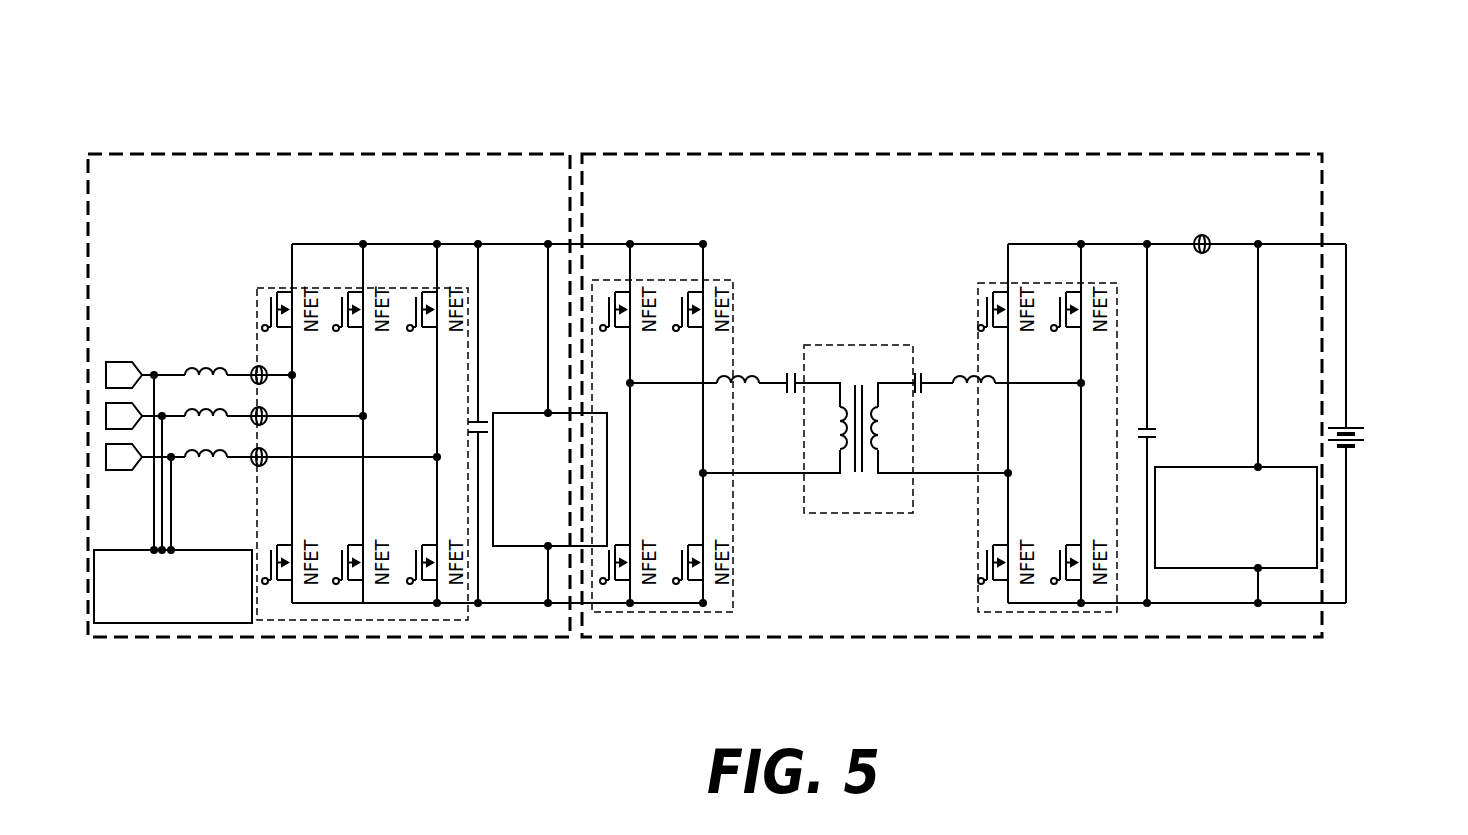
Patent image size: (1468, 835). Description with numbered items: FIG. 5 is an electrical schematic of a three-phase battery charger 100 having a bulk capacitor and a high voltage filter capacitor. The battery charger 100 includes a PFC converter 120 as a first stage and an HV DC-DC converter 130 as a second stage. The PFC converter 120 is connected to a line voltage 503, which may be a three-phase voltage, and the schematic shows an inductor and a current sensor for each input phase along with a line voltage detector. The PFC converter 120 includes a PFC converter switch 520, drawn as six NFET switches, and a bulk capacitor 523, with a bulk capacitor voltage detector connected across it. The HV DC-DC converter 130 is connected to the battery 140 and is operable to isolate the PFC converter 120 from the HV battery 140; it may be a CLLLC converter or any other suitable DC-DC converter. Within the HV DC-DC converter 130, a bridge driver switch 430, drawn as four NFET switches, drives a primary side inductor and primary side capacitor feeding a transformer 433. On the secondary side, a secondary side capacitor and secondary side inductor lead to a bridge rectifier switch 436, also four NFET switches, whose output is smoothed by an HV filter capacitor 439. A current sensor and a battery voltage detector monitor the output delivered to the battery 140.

The battery charger 100 is at (671, 62).
The PFC converter 120 is at (395, 372).
The HV DC-DC converter 130 is at (964, 372).
The line voltage 503 is at (265, 464).
The PFC converter switch 520 is at (362, 432).
The bulk capacitor 523 is at (503, 423).
The bridge driver switch 430 is at (663, 428).
The transformer 433 is at (855, 410).
The bridge rectifier switch 436 is at (1047, 428).
The HV filter capacitor 439 is at (1189, 423).
The battery 140 is at (1387, 423).